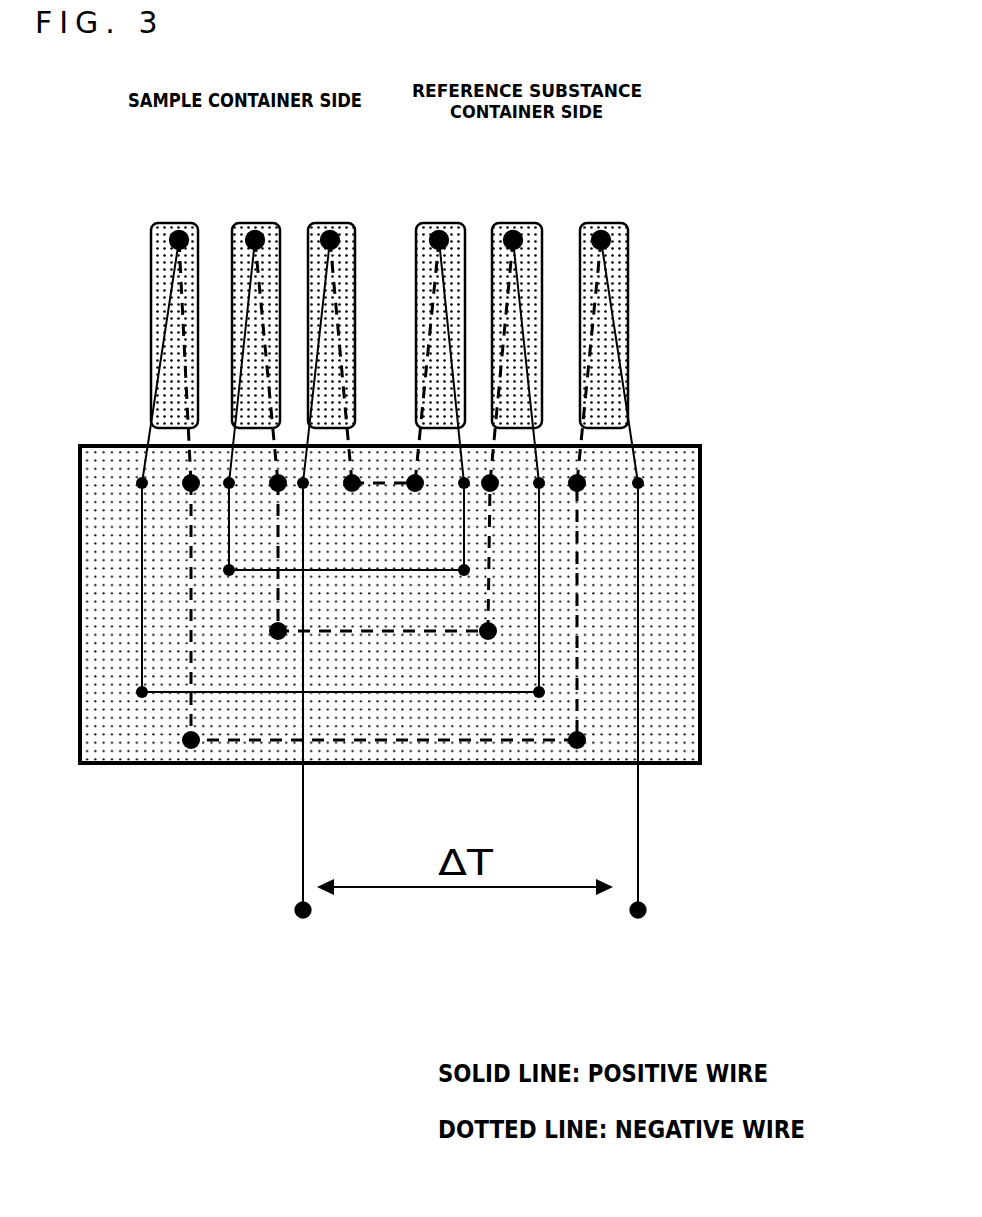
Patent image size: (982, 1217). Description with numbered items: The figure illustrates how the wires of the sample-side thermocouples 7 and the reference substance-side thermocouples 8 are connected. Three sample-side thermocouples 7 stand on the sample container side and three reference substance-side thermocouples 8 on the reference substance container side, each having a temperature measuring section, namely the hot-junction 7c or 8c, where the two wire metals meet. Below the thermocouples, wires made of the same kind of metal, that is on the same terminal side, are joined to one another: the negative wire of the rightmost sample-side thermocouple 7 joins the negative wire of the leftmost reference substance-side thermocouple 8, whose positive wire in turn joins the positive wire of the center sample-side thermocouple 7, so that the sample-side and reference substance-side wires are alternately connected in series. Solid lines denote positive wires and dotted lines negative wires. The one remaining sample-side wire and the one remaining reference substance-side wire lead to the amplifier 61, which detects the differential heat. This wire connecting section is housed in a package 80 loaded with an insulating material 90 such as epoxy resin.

The sample-side thermocouple 7 is at (176, 223).
The hot-junction 7c is at (178, 240).
The reference substance-side thermocouple 8 is at (441, 223).
The hot-junction 8c is at (602, 240).
The package 80 is at (700, 467).
The insulating material 90 is at (673, 687).
The amplifier 61 is at (470, 733).